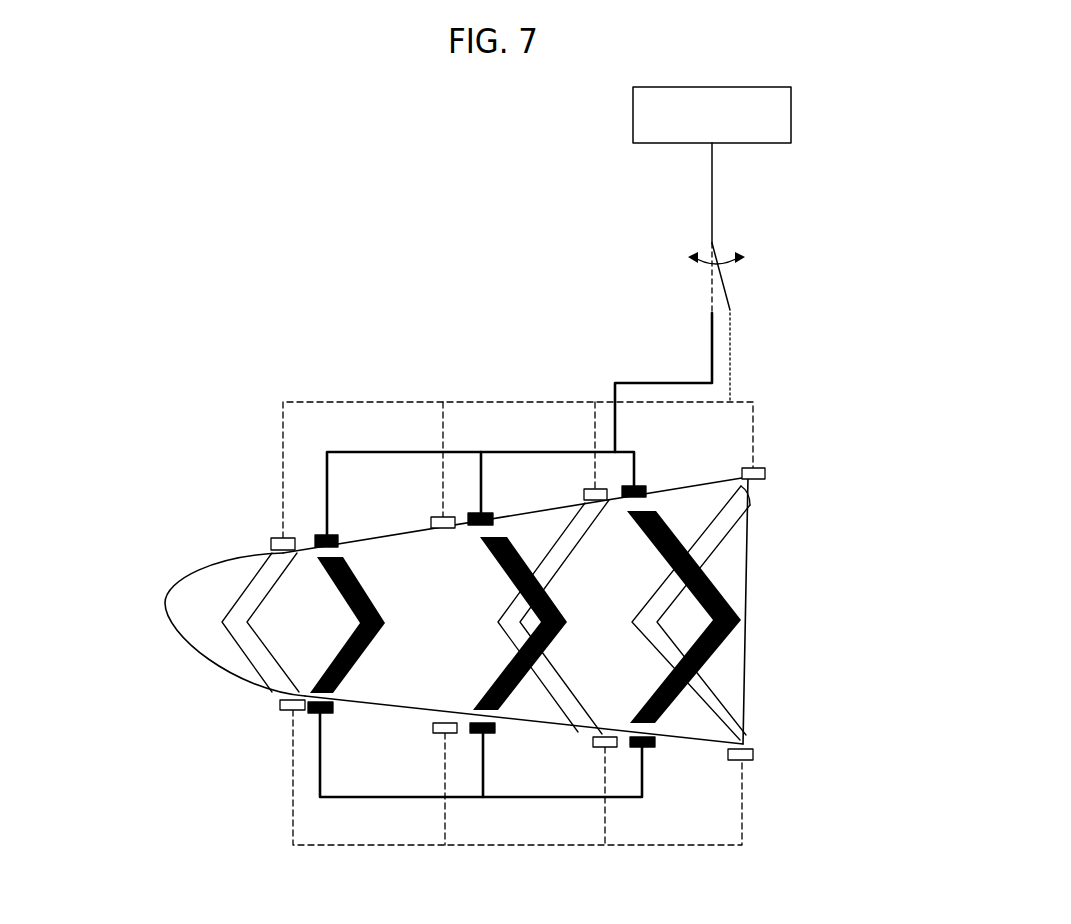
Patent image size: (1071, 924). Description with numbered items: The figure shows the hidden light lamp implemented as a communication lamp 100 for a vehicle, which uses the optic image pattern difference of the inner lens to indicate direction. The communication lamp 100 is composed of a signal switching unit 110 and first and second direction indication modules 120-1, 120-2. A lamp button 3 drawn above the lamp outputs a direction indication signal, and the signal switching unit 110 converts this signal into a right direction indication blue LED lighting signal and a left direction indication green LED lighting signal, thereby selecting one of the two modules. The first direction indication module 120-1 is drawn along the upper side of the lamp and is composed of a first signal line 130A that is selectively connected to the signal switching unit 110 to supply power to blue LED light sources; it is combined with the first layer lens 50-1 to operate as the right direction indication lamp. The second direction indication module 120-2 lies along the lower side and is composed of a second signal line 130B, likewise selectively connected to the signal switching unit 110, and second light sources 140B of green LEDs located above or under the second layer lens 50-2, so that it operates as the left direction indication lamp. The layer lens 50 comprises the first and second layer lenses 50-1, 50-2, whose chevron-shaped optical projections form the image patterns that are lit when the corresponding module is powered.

The lamp button 3 is at (633, 110).
The communication lamp 100 is at (248, 318).
The signal switching unit 110 is at (712, 293).
The first direction indication module 120-1 is at (105, 423).
The second direction indication module 120-2 is at (105, 748).
The first signal line 130A is at (326, 455).
The second signal line 130B is at (293, 807).
The second light sources 140B is at (313, 537).
The layer lens 50 is at (578, 613).
The first layer lens 50-1 is at (708, 650).
The second layer lens 50-2 is at (715, 538).